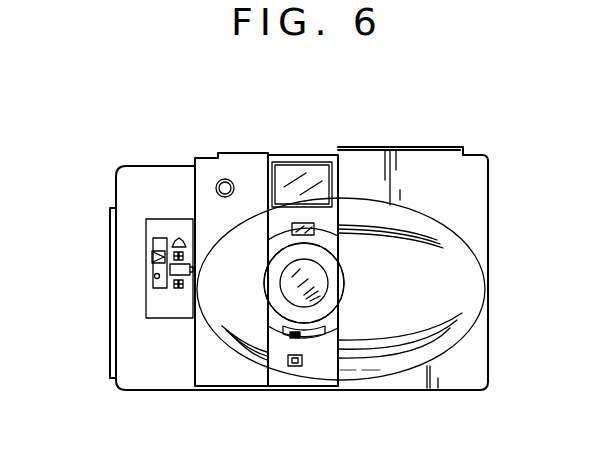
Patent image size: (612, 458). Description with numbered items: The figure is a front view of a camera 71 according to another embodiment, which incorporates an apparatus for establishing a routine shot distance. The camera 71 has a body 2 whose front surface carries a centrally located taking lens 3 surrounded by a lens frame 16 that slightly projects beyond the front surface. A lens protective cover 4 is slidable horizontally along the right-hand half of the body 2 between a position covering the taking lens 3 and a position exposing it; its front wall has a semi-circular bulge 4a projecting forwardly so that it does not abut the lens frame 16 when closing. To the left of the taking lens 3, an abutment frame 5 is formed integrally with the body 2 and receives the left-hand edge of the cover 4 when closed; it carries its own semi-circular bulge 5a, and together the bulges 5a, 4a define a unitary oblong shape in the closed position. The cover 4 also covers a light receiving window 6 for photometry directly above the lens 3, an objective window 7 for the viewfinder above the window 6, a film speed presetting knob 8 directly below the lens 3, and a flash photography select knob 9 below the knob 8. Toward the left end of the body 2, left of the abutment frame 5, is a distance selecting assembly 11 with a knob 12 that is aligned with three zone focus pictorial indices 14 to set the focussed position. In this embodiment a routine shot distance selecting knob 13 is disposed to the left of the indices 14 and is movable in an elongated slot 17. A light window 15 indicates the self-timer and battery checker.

The camera 71 is at (125, 137).
The body 2 is at (150, 389).
The abutment frame 5 is at (233, 168).
The semi-circular bulge 5a is at (238, 352).
The lens protective cover 4 is at (418, 160).
The semi-circular bulge 4a is at (437, 352).
The objective window 7 is at (288, 172).
The light receiving window 6 is at (292, 230).
The taking lens 3 is at (283, 291).
The lens frame 16 is at (337, 292).
The film speed presetting knob 8 is at (287, 337).
The flash photography select knob 9 is at (301, 365).
The light window 15 is at (234, 188).
The distance selecting assembly 11 is at (162, 230).
The knob 12 is at (190, 272).
The routine shot distance selecting knob 13 is at (153, 257).
The zone focus pictorial indices 14 is at (181, 237).
The elongated slot 17 is at (151, 275).